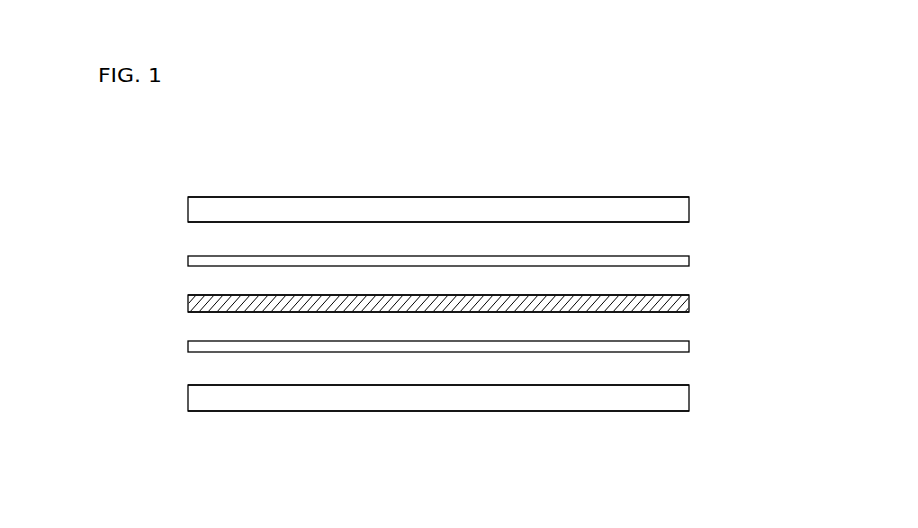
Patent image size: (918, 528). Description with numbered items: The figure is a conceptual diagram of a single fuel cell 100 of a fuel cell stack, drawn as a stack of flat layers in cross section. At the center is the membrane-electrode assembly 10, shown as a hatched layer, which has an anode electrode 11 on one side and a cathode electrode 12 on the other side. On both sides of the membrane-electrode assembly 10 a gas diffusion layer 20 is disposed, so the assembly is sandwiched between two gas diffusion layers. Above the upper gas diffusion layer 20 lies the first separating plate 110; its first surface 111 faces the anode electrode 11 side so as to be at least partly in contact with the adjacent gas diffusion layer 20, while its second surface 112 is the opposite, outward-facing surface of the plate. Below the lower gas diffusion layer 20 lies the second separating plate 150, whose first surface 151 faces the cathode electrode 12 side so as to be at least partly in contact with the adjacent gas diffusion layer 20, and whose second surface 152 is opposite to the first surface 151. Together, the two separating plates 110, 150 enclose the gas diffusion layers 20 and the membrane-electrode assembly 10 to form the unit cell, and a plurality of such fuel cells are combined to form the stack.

The fuel cell 100 is at (182, 152).
The first separating plate 110 is at (690, 209).
The first surface 111 is at (199, 222).
The second surface 112 is at (676, 195).
The gas diffusion layer 20 is at (690, 260).
The membrane-electrode assembly 10 is at (690, 306).
The anode electrode 11 is at (680, 295).
The cathode electrode 12 is at (678, 313).
The second separating plate 150 is at (690, 398).
The first surface 151 is at (686, 385).
The second surface 152 is at (199, 411).